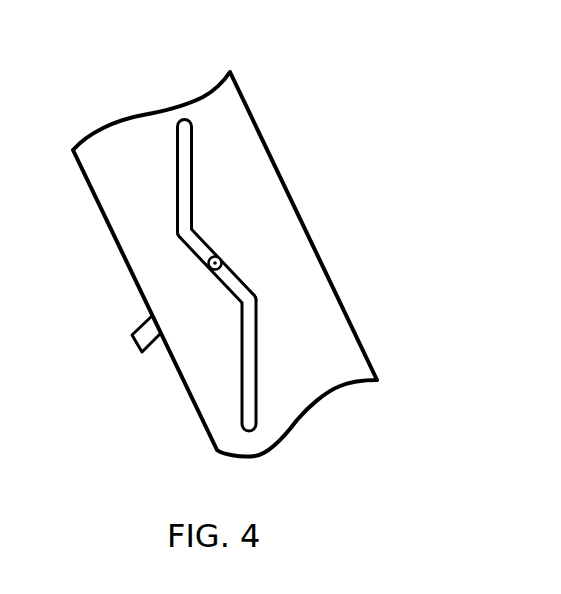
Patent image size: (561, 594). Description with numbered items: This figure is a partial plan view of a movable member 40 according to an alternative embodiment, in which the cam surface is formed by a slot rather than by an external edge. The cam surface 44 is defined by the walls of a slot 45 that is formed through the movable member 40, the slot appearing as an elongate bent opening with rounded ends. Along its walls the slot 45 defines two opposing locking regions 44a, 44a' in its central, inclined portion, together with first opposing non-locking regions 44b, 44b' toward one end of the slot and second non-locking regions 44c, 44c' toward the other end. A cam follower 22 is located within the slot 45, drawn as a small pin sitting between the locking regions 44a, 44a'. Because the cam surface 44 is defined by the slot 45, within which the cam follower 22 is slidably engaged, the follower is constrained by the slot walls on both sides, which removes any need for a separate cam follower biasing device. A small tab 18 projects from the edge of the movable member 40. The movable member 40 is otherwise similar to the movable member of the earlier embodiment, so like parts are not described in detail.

The movable member 40 is at (353, 129).
The cam surface 44 is at (207, 124).
The locking region 44a is at (248, 266).
The first non-locking region 44b is at (225, 180).
The second non-locking region 44c is at (290, 362).
The locking region 44a' is at (201, 308).
The first non-locking region 44b' is at (138, 177).
The second non-locking region 44c' is at (189, 417).
The slot 45 is at (252, 329).
The cam follower 22 is at (216, 256).
The tab 18 is at (132, 340).